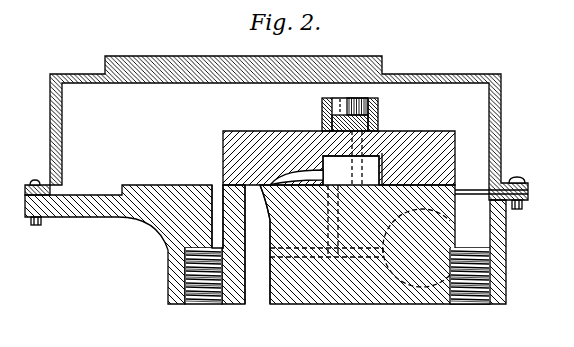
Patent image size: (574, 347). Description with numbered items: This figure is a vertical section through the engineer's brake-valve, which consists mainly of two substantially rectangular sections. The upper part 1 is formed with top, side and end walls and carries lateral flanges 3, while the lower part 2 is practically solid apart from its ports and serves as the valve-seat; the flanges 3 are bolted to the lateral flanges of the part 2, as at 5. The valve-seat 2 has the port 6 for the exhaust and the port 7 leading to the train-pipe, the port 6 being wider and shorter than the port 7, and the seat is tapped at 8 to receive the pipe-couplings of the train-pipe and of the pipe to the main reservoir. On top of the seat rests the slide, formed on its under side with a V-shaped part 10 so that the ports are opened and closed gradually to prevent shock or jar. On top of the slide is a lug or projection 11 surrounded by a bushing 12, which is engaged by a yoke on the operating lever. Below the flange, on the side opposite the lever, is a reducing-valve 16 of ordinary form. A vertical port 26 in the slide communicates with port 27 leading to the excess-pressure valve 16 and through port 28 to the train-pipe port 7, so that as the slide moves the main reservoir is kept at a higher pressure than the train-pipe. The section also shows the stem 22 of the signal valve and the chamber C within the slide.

The part 1 is at (187, 55).
The part 2 is at (163, 247).
The lateral flanges 3 is at (32, 183).
The bolts 5 is at (34, 227).
The port 6 is at (257, 244).
The port 7 is at (217, 216).
The tapped openings 8 is at (337, 286).
The V-shaped part 10 is at (296, 177).
The lug or projection 11 is at (360, 95).
The bushing 12 is at (335, 114).
The reducing-valve 16 is at (496, 346).
The stem 22 is at (452, 132).
The vertical port 26 is at (386, 127).
The port 27 is at (377, 236).
The port 28 is at (314, 246).
The chamber C is at (351, 170).